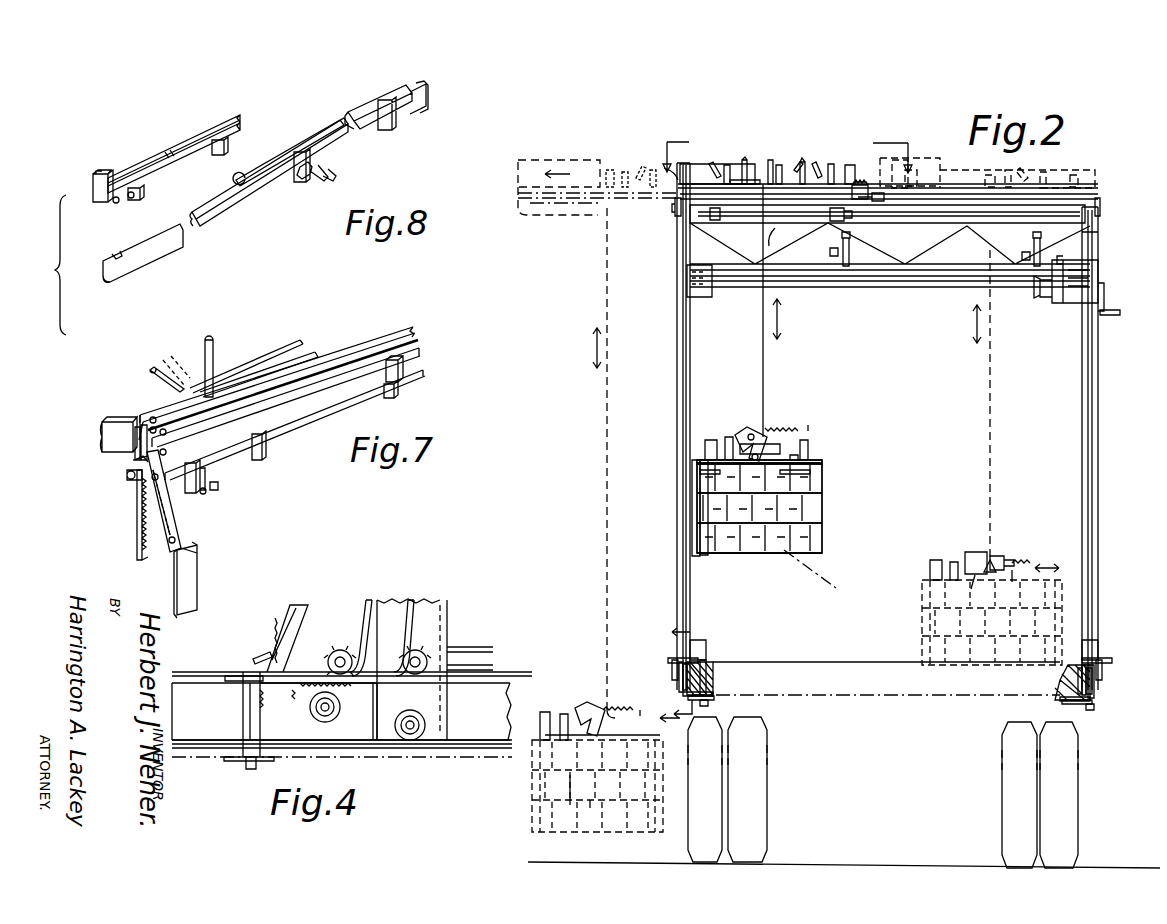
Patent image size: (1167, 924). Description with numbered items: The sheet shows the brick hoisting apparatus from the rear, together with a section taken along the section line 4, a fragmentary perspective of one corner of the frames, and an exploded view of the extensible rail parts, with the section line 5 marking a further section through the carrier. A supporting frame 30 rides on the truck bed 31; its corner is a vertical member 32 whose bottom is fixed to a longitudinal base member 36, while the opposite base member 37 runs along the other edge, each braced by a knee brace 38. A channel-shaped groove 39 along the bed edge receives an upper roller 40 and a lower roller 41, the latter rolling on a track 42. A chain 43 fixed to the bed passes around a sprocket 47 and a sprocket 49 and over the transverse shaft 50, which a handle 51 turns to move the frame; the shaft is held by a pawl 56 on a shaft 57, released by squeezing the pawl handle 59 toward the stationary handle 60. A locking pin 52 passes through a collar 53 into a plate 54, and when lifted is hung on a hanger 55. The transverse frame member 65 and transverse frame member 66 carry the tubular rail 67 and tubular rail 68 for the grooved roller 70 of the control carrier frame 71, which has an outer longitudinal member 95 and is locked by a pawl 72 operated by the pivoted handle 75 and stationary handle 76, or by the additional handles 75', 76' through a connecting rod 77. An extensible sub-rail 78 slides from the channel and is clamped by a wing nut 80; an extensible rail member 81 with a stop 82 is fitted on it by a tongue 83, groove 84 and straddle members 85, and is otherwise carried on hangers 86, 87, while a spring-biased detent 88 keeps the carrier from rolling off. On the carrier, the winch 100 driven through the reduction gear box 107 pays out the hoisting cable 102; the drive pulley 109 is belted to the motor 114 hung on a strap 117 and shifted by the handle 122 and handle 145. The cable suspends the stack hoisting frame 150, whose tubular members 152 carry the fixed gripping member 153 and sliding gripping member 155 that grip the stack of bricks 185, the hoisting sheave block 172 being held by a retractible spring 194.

In FIG. 2, the section line 4 is at (692, 672).
In FIG. 2, the section line 5 is at (783, 145).
In FIG. 2, the supporting frame 30 is at (1105, 260).
In FIG. 4, the truck bed 31 is at (470, 748).
In FIG. 2, the truck bed 31 is at (879, 694).
In FIG. 7, the vertical member 32 is at (196, 586).
In FIG. 4, the vertical member 32 is at (447, 602).
In FIG. 4, the longitudinal base member 36 is at (505, 680).
In FIG. 2, the longitudinal base member 36 is at (682, 686).
In FIG. 2, the longitudinal base member 37 is at (1094, 676).
In FIG. 4, the knee brace 38 is at (303, 610).
In FIG. 2, the knee brace 38 is at (677, 362).
In FIG. 2, the channel-shaped groove 39 is at (700, 668).
In FIG. 4, the upper roller 40 is at (310, 708).
In FIG. 2, the upper roller 40 is at (680, 670).
In FIG. 4, the lower roller 41 is at (426, 722).
In FIG. 2, the lower roller 41 is at (683, 690).
In FIG. 4, the track 42 is at (335, 742).
In FIG. 2, the track 42 is at (714, 680).
In FIG. 4, the chain 43 is at (368, 600).
In FIG. 2, the chain 43 is at (690, 396).
In FIG. 4, the sprocket 47 is at (426, 655).
In FIG. 4, the sprocket 49 is at (338, 650).
In FIG. 2, the sprocket 49 is at (692, 643).
In FIG. 2, the transverse shaft 50 is at (885, 288).
In FIG. 2, the handle 51 is at (1110, 312).
In FIG. 4, the locking pin 52 is at (240, 676).
In FIG. 2, the locking pin 52 is at (669, 658).
In FIG. 4, the collar 53 is at (242, 712).
In FIG. 2, the collar 53 is at (706, 660).
In FIG. 4, the plate 54 is at (242, 760).
In FIG. 2, the plate 54 is at (704, 704).
In FIG. 4, the hanger 55 is at (260, 652).
In FIG. 2, the hanger 55 is at (676, 660).
In FIG. 2, the pawl 56 is at (1060, 304).
In FIG. 2, the shaft 57 is at (940, 280).
In FIG. 2, the pawl handle 59 is at (850, 250).
In FIG. 2, the stationary handle 60 is at (830, 252).
In FIG. 7, the transverse frame member 65 is at (405, 335).
In FIG. 2, the transverse frame member 65 is at (1098, 212).
In FIG. 8, the transverse frame member 66 is at (242, 215).
In FIG. 7, the tubular rail 67 is at (357, 345).
In FIG. 2, the tubular rail 67 is at (1084, 192).
In FIG. 8, the tubular rail 68 is at (288, 140).
In FIG. 7, the grooved roller 70 is at (122, 456).
In FIG. 7, the control carrier frame 71 is at (320, 352).
In FIG. 2, the control carrier frame 71 is at (785, 162).
In FIG. 7, the pawl 72 is at (140, 418).
In FIG. 2, the pawl 72 is at (664, 168).
In FIG. 7, the pivoted handle 75 is at (159, 356).
In FIG. 2, the pivoted handle 75 is at (716, 153).
In FIG. 2, the additional handle 75' is at (820, 156).
In FIG. 7, the stationary handle 76 is at (222, 345).
In FIG. 2, the stationary handle 76 is at (741, 160).
In FIG. 2, the additional stationary handle 76' is at (843, 160).
In FIG. 7, the connecting rod 77 is at (255, 352).
In FIG. 2, the connecting rod 77 is at (760, 186).
In FIG. 8, the extensible sub-rail 78 is at (152, 256).
In FIG. 2, the extensible sub-rail 78 is at (565, 212).
In FIG. 8, the wing nut 80 is at (296, 183).
In FIG. 8, the extensible rail member 81 is at (190, 140).
In FIG. 7, the extensible rail member 81 is at (305, 423).
In FIG. 2, the extensible rail member 81 is at (755, 222).
In FIG. 8, the stop 82 is at (104, 170).
In FIG. 7, the stop 82 is at (216, 472).
In FIG. 8, the tongue 83 is at (116, 202).
In FIG. 7, the tongue 83 is at (203, 494).
In FIG. 8, the groove 84 is at (120, 252).
In FIG. 8, the straddle member 85 is at (212, 150).
In FIG. 7, the straddle member 85 is at (400, 390).
In FIG. 7, the hanger 86 is at (264, 462).
In FIG. 2, the hanger 86 is at (722, 230).
In FIG. 7, the hanger 87 is at (404, 366).
In FIG. 2, the hanger 87 is at (852, 216).
In FIG. 7, the spring-biased detent 88 is at (140, 505).
In FIG. 2, the spring-biased detent 88 is at (674, 212).
In FIG. 7, the outer longitudinal member 95 is at (108, 418).
In FIG. 2, the winch 100 is at (770, 152).
In FIG. 2, the hoisting cable 102 is at (765, 370).
In FIG. 2, the reduction gear box 107 is at (700, 176).
In FIG. 2, the pulley 109 is at (874, 181).
In FIG. 2, the motor 114 is at (850, 162).
In FIG. 2, the strap 117 is at (944, 185).
In FIG. 2, the handle 122 is at (804, 160).
In FIG. 2, the handle 145 is at (786, 239).
In FIG. 2, the stack hoisting frame 150 is at (814, 423).
In FIG. 2, the tubular member 152 is at (810, 452).
In FIG. 2, the gripping member 153 is at (700, 512).
In FIG. 2, the gripping member 155 is at (822, 500).
In FIG. 2, the hoisting sheave block 172 is at (746, 434).
In FIG. 2, the stack of bricks 185 is at (587, 833).
In FIG. 2, the retractible spring 194 is at (788, 428).